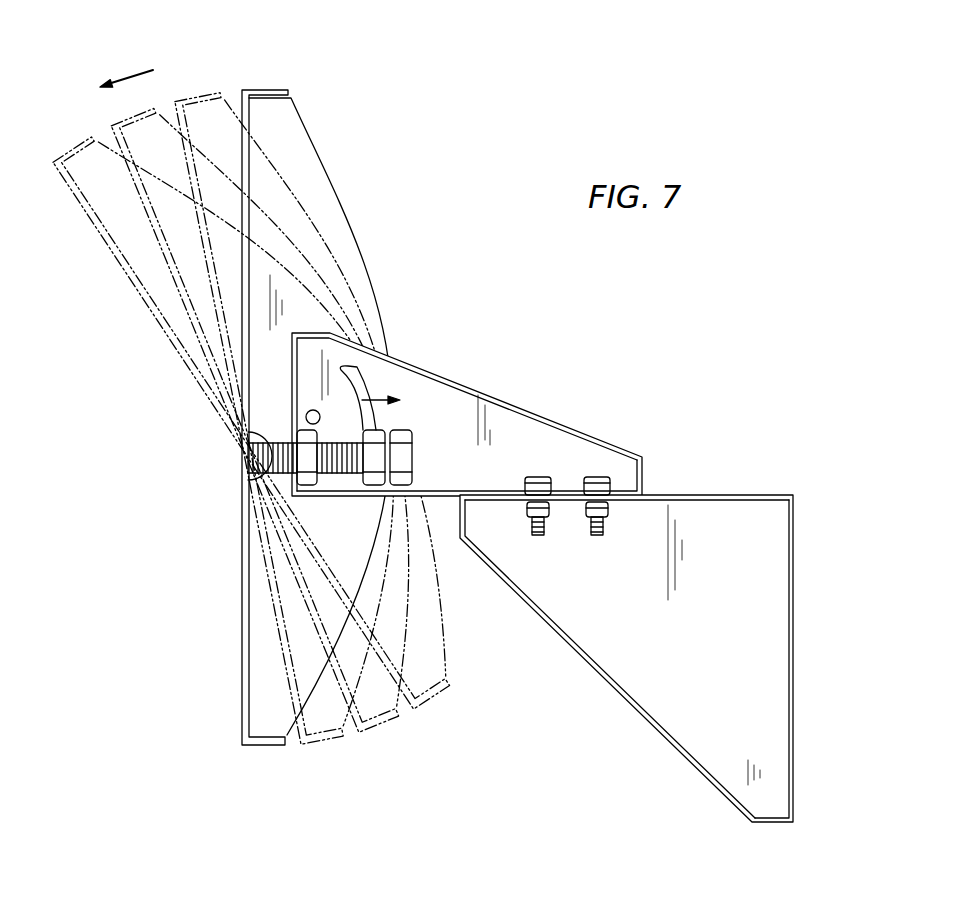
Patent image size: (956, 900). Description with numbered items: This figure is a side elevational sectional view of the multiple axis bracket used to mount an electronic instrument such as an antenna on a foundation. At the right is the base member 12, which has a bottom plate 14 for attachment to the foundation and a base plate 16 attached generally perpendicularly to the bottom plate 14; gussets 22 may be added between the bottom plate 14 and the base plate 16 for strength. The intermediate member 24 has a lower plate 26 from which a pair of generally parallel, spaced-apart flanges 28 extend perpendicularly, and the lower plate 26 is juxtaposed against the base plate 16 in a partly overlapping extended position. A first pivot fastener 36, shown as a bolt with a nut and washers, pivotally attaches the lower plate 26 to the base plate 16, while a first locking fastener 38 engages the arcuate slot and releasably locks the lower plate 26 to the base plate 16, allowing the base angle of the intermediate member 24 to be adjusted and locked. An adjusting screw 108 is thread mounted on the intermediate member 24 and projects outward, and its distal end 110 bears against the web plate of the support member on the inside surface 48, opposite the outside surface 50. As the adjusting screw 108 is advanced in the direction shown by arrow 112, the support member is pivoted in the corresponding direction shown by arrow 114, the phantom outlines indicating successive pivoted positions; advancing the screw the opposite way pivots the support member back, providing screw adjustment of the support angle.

The base member 12 is at (667, 634).
The bottom plate 14 is at (793, 697).
The base plate 16 is at (762, 495).
The gussets 22 is at (622, 688).
The intermediate member 24 is at (497, 414).
The lower plate 26 is at (440, 491).
The flanges 28 is at (507, 412).
The first pivot fastener 36 is at (597, 535).
The first locking fastener 38 is at (538, 535).
The inside surface 48 is at (252, 727).
The outside surface 50 is at (242, 603).
The adjusting screw 108 is at (243, 439).
The distal end 110 is at (278, 474).
The arrow 112 is at (375, 398).
The arrow 114 is at (127, 78).